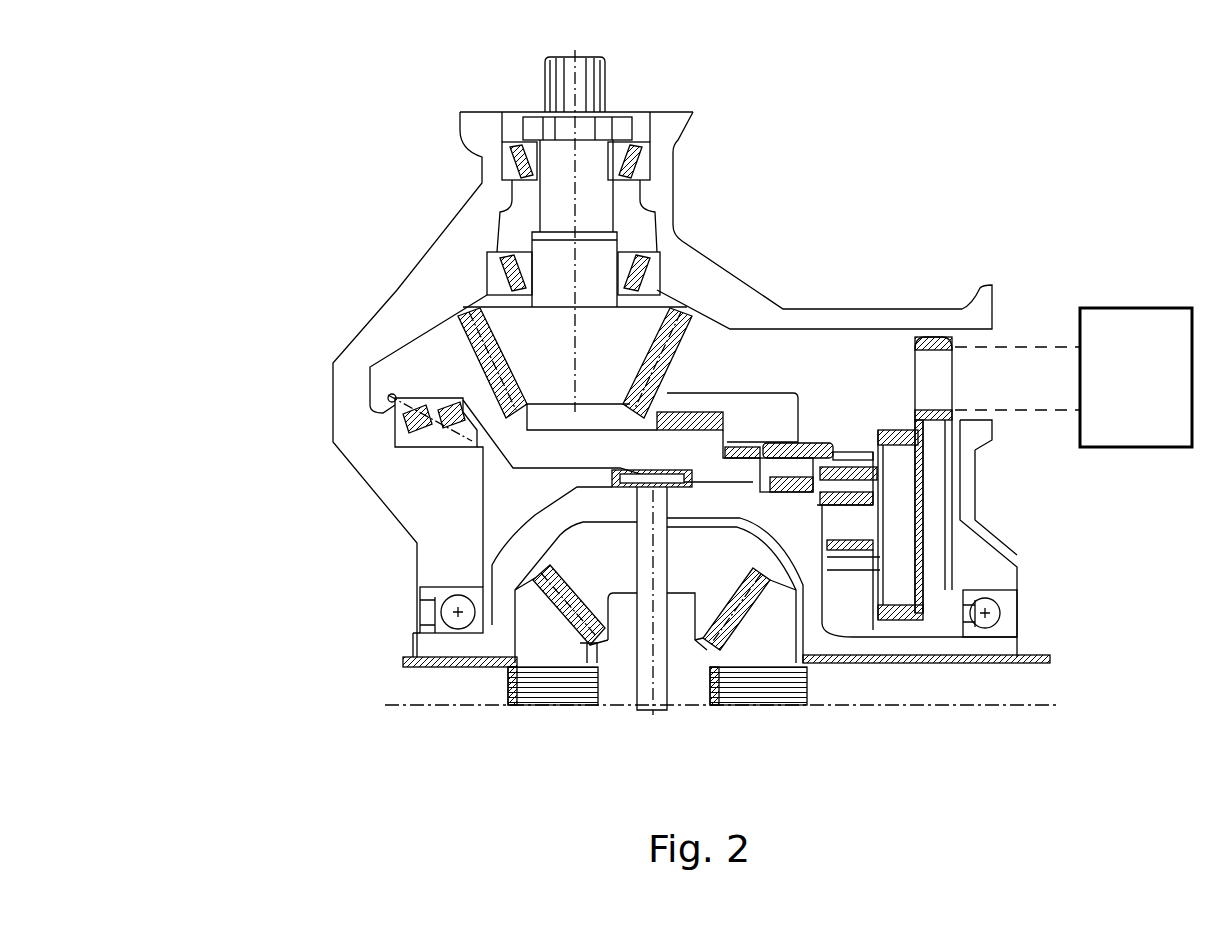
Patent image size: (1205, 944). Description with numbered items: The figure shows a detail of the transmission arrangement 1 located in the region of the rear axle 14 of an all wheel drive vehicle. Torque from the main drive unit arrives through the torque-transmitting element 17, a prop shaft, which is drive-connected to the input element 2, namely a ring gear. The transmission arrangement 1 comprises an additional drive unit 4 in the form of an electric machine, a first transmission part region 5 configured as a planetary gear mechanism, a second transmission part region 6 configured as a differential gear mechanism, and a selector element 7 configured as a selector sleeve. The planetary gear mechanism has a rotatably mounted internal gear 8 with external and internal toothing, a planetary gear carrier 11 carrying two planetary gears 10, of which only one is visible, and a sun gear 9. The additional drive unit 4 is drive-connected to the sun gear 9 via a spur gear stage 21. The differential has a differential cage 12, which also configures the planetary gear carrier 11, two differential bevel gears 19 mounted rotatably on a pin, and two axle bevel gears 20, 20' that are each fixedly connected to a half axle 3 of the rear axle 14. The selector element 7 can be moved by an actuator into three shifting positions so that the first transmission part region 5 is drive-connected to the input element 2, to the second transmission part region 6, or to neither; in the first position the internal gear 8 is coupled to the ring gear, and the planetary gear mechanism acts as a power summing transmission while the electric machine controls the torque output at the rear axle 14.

The transmission arrangement 1 is at (310, 158).
The torque-transmitting element 17 is at (695, 231).
The input element 2 is at (667, 305).
The selector element 7 is at (824, 308).
The internal gear 8 is at (812, 465).
The additional drive unit 4 is at (1073, 340).
The second transmission part region 6 is at (461, 384).
The rear axle 14 is at (358, 667).
The spur gear stage 21 is at (963, 423).
The planetary gear 10 is at (897, 480).
The sun gear 9 is at (935, 480).
The differential bevel gear 19 is at (597, 573).
The axle bevel gear 20 is at (540, 720).
The axle bevel gear 20' is at (809, 721).
The planetary gear carrier 11 is at (915, 656).
The differential cage 12 is at (813, 643).
The half axle 3 is at (705, 747).
The first transmission part region 5 is at (989, 715).